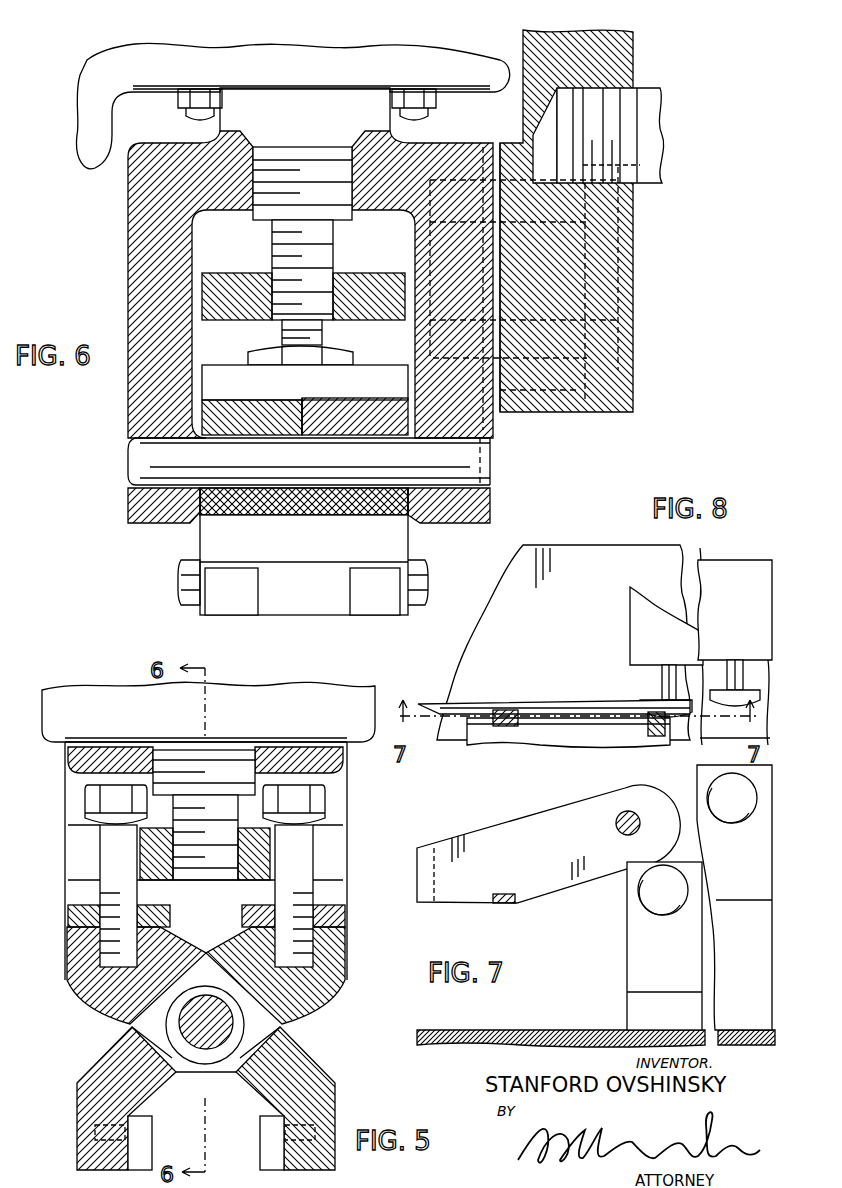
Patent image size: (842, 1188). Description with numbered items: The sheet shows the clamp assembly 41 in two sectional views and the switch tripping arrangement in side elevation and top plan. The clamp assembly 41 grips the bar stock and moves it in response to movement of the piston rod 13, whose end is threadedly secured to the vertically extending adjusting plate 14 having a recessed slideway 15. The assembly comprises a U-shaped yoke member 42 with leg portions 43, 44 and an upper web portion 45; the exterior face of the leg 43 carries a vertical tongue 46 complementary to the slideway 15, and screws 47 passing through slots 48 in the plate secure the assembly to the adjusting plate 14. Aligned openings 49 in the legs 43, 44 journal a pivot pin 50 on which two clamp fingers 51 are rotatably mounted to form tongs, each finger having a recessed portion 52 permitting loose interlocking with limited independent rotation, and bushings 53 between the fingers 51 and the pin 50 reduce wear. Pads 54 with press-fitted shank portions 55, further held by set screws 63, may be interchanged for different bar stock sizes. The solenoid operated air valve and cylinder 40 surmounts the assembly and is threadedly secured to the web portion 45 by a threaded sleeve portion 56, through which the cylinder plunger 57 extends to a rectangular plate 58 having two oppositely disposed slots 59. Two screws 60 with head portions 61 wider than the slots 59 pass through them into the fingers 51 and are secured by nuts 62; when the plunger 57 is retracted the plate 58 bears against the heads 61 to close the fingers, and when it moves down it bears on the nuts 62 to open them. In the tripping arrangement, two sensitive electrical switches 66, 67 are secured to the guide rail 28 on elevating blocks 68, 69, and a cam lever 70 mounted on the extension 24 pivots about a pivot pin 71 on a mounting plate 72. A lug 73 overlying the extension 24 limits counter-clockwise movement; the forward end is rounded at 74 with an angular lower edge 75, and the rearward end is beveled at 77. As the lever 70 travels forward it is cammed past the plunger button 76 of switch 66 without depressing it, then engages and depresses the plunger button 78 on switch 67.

In FIG. 6, the piston rod 13 is at (655, 154).
In FIG. 6, the adjusting plate 14 is at (633, 293).
In FIG. 6, the recessed slideway 15 is at (495, 416).
In FIG. 8, the extension 24 is at (598, 742).
In FIG. 8, the guide rail 28 is at (604, 556).
In FIG. 7, the guide rail 28 is at (498, 1034).
In FIG. 6, the solenoid operated air valve and cylinder 40 is at (100, 70).
In FIG. 5, the solenoid operated air valve and cylinder 40 is at (60, 700).
In FIG. 6, the clamp assembly 41 is at (128, 518).
In FIG. 5, the clamp assembly 41 is at (62, 898).
In FIG. 6, the yoke member 42 is at (128, 274).
In FIG. 5, the yoke member 42 is at (72, 1010).
In FIG. 6, the leg portion 43 is at (490, 504).
In FIG. 5, the leg portion 43 is at (338, 1006).
In FIG. 6, the leg portion 44 is at (128, 410).
In FIG. 6, the web portion 45 is at (372, 200).
In FIG. 5, the web portion 45 is at (80, 757).
In FIG. 6, the tongue 46 is at (493, 152).
In FIG. 6, the screws 47 is at (633, 213).
In FIG. 6, the slots 48 is at (567, 395).
In FIG. 6, the aligned openings 49 is at (130, 451).
In FIG. 6, the pivot pin 50 is at (130, 480).
In FIG. 5, the pivot pin 50 is at (212, 1060).
In FIG. 6, the clamp fingers 51 is at (225, 372).
In FIG. 5, the clamp fingers 51 is at (80, 1091).
In FIG. 6, the recessed portion 52 is at (352, 402).
In FIG. 5, the recessed portion 52 is at (132, 1028).
In FIG. 6, the bushings 53 is at (302, 512).
In FIG. 5, the bushings 53 is at (192, 1060).
In FIG. 6, the pads 54 is at (233, 605).
In FIG. 5, the pads 54 is at (150, 1140).
In FIG. 5, the shank portion 55 is at (95, 1132).
In FIG. 6, the threaded sleeve portion 56 is at (257, 212).
In FIG. 5, the threaded sleeve portion 56 is at (233, 752).
In FIG. 6, the cylinder plunger 57 is at (320, 250).
In FIG. 5, the cylinder plunger 57 is at (228, 870).
In FIG. 6, the rectangular plate 58 is at (398, 320).
In FIG. 5, the rectangular plate 58 is at (158, 866).
In FIG. 5, the slots 59 is at (80, 846).
In FIG. 6, the screws 60 is at (322, 337).
In FIG. 5, the screws 60 is at (108, 862).
In FIG. 6, the head portions 61 is at (307, 104).
In FIG. 5, the head portions 61 is at (92, 800).
In FIG. 6, the nuts 62 is at (268, 358).
In FIG. 5, the nuts 62 is at (72, 914).
In FIG. 6, the set screws 63 is at (181, 597).
In FIG. 8, the electrical switch 66 is at (632, 620).
In FIG. 7, the electrical switch 66 is at (645, 960).
In FIG. 8, the electrical switch 67 is at (737, 565).
In FIG. 7, the electrical switch 67 is at (720, 846).
In FIG. 7, the block 68 is at (645, 1008).
In FIG. 7, the block 69 is at (742, 937).
In FIG. 8, the cam lever 70 is at (553, 705).
In FIG. 7, the cam lever 70 is at (509, 832).
In FIG. 8, the pivot pin 71 is at (632, 726).
In FIG. 7, the pivot pin 71 is at (618, 814).
In FIG. 8, the mounting plate 72 is at (556, 735).
In FIG. 8, the lug 73 is at (505, 712).
In FIG. 7, the lug 73 is at (503, 903).
In FIG. 7, the rounded end 74 is at (666, 822).
In FIG. 7, the lower edge 75 is at (585, 880).
In FIG. 8, the plunger button 76 is at (650, 702).
In FIG. 7, the plunger button 76 is at (656, 897).
In FIG. 8, the beveled end 77 is at (424, 703).
In FIG. 7, the beveled end 77 is at (428, 850).
In FIG. 8, the plunger button 78 is at (722, 704).
In FIG. 7, the plunger button 78 is at (740, 816).